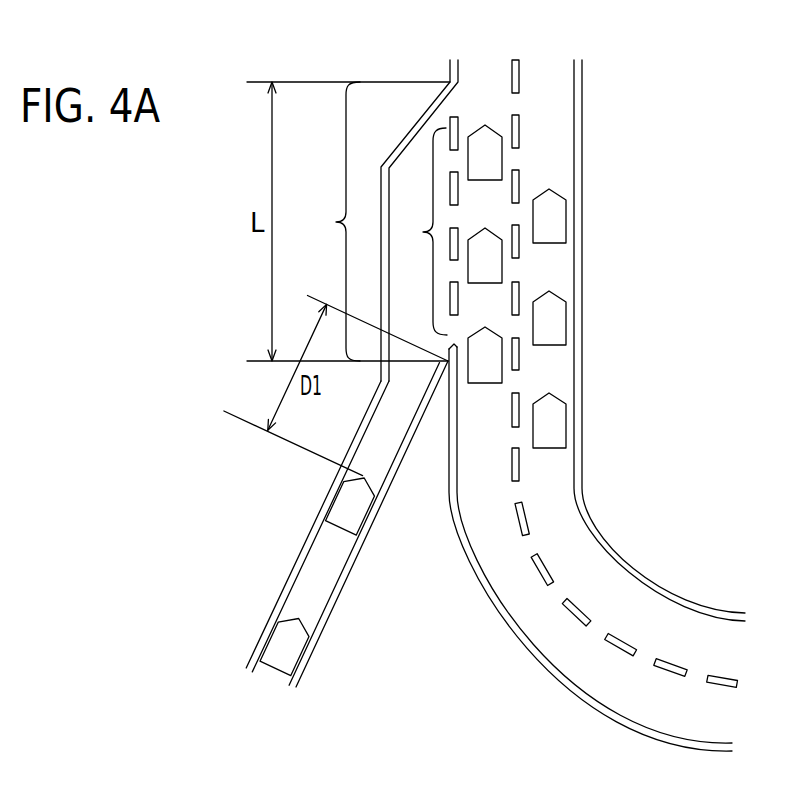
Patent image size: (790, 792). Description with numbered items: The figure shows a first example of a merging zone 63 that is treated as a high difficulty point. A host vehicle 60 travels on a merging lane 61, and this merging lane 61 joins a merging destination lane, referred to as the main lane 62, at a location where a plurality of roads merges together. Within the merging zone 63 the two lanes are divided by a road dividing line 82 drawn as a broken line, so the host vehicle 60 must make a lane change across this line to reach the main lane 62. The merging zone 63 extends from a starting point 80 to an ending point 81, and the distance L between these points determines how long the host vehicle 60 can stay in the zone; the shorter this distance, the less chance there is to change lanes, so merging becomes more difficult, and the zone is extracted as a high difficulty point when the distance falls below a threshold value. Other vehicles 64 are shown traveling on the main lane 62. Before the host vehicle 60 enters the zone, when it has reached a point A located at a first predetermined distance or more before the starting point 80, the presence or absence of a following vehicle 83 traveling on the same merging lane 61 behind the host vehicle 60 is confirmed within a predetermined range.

The host vehicle 60 is at (350, 502).
The merging lane 61 is at (312, 587).
The main lane 62 is at (553, 492).
The merging zone 63 is at (332, 221).
The other vehicles on main road 64 is at (502, 157).
The starting point 80 is at (262, 361).
The ending point 81 is at (263, 82).
The road dividing line 82 is at (421, 231).
The following vehicle 83 is at (283, 657).